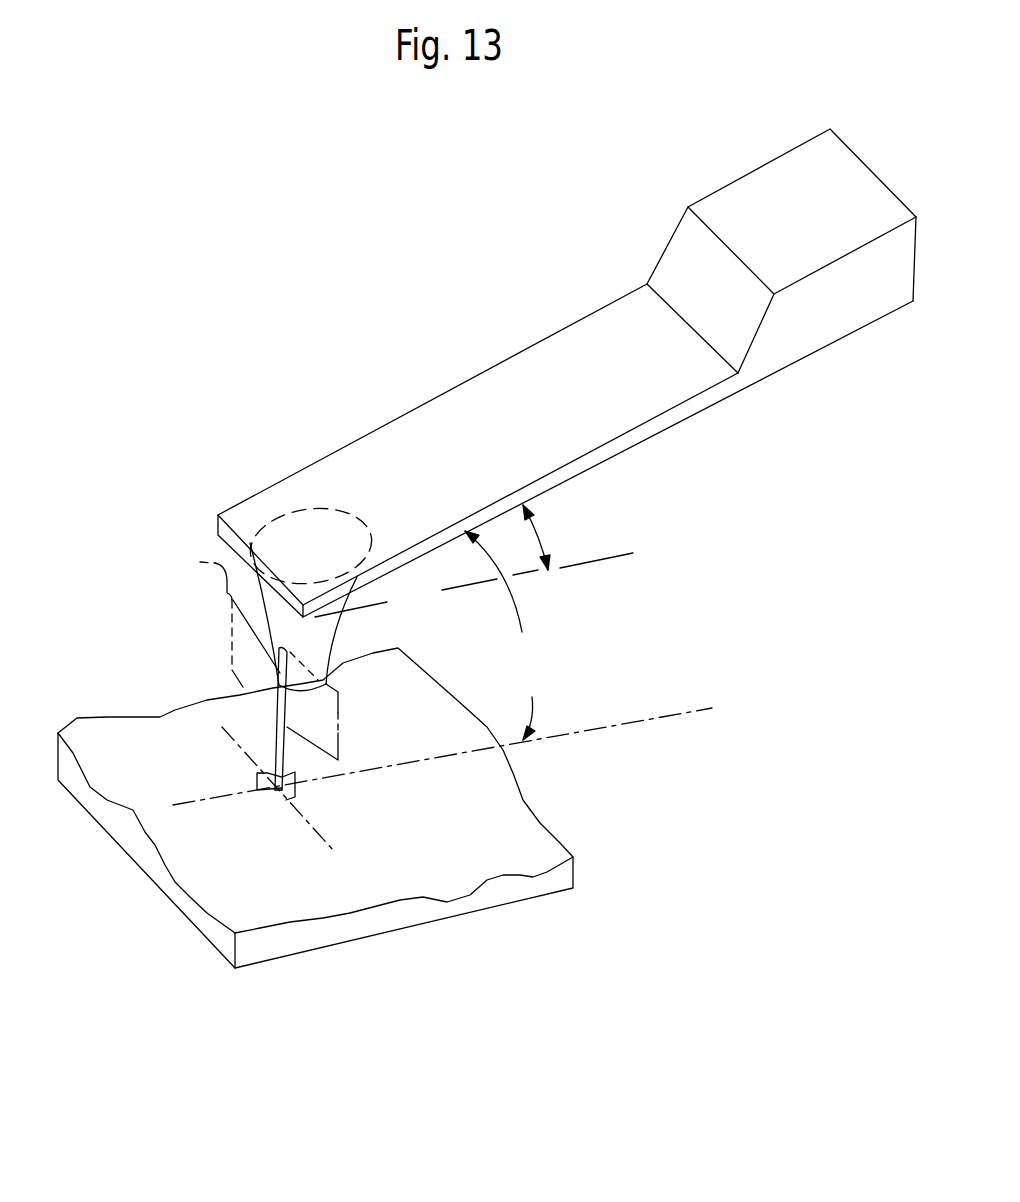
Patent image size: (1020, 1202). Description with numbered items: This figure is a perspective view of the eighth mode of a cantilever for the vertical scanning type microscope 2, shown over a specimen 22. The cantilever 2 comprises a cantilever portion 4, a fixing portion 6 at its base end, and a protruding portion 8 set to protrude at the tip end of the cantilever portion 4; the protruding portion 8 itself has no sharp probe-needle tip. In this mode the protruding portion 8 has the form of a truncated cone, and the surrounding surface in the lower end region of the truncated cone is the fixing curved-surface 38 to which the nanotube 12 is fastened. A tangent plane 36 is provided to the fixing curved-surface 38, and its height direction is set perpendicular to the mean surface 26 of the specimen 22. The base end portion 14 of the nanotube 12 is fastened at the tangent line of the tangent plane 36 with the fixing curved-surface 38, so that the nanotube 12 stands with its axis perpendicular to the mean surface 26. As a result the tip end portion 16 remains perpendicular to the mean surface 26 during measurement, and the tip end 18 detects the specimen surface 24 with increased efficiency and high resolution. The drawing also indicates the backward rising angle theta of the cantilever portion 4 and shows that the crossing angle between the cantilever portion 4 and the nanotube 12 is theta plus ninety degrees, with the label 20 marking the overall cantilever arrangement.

The cantilever for the vertical scanning type microscope 2 is at (435, 388).
The cantilever portion 4 is at (650, 402).
The fixing portion 6 is at (788, 267).
The protruding portion 8 is at (337, 617).
The nanotube 12 is at (262, 721).
The base end portion 14 is at (277, 670).
The tip end portion 16 is at (270, 758).
The tip end 18 is at (278, 790).
The probe device 20 is at (488, 325).
The specimen 22 is at (457, 905).
The specimen surface 24 is at (335, 903).
The mean surface 26 is at (433, 757).
The tangent plane 36 is at (191, 614).
The fixing curved-surface 38 is at (333, 686).